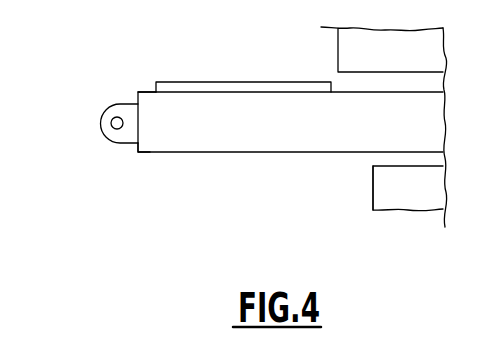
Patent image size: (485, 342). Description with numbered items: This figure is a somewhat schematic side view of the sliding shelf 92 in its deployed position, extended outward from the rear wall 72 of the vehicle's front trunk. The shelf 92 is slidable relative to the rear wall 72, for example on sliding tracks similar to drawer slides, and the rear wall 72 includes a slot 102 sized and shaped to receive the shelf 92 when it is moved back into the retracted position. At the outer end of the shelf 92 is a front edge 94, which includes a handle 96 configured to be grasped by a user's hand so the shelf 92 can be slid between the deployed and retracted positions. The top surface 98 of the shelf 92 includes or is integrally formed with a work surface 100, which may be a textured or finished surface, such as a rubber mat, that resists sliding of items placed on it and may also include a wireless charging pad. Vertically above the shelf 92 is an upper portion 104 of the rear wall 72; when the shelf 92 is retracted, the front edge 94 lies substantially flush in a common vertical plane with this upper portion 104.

The rear wall 72 is at (372, 195).
The shelf 92 is at (137, 153).
The front edge 94 is at (137, 100).
The handle 96 is at (100, 126).
The top surface 98 is at (146, 92).
The work surface 100 is at (206, 88).
The slot 102 is at (381, 158).
The upper portion 104 is at (338, 53).